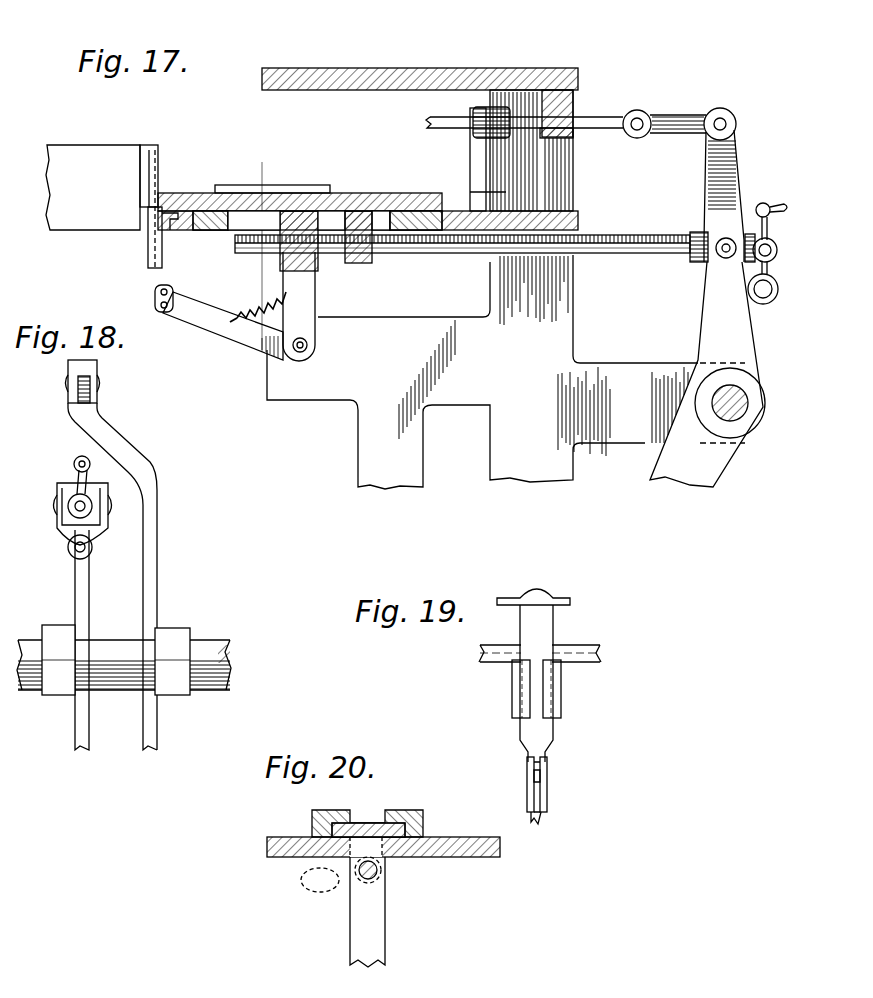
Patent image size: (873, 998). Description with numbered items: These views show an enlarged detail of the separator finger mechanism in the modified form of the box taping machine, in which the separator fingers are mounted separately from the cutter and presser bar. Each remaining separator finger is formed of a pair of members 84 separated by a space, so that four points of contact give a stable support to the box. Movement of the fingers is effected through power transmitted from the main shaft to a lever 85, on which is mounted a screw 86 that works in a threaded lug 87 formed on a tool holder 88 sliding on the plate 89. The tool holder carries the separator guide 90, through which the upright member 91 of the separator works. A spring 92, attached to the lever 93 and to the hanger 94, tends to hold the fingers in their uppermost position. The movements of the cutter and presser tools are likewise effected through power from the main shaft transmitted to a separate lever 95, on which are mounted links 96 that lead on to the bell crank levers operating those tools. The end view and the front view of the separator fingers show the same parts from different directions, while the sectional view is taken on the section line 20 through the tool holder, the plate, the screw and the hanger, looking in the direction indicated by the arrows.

In FIG. 17, the section line 20 is at (233, 161).
In FIG. 17, the members of separator finger 84 is at (150, 145).
In FIG. 19, the members of separator finger 84 is at (545, 597).
In FIG. 17, the lever 85 is at (735, 318).
In FIG. 18, the lever 85 is at (85, 612).
In FIG. 17, the screw 86 is at (462, 254).
In FIG. 20, the screw 86 is at (382, 870).
In FIG. 17, the threaded lug 87 is at (362, 208).
In FIG. 20, the threaded lug 87 is at (352, 858).
In FIG. 17, the tool holder 88 is at (290, 208).
In FIG. 20, the tool holder 88 is at (362, 826).
In FIG. 17, the plate 89 is at (542, 226).
In FIG. 19, the plate 89 is at (585, 656).
In FIG. 20, the plate 89 is at (440, 848).
In FIG. 17, the separator guide 90 is at (160, 240).
In FIG. 19, the separator guide 90 is at (553, 686).
In FIG. 17, the upright member of the separator 91 is at (160, 190).
In FIG. 19, the upright member of the separator 91 is at (540, 632).
In FIG. 17, the spring 92 is at (290, 300).
In FIG. 17, the lever 93 is at (222, 322).
In FIG. 19, the lever 93 is at (546, 806).
In FIG. 17, the hanger 94 is at (305, 318).
In FIG. 20, the hanger 94 is at (372, 922).
In FIG. 17, the lever 95 is at (742, 205).
In FIG. 18, the lever 95 is at (152, 545).
In FIG. 17, the links 96 is at (678, 124).
In FIG. 18, the links 96 is at (82, 372).